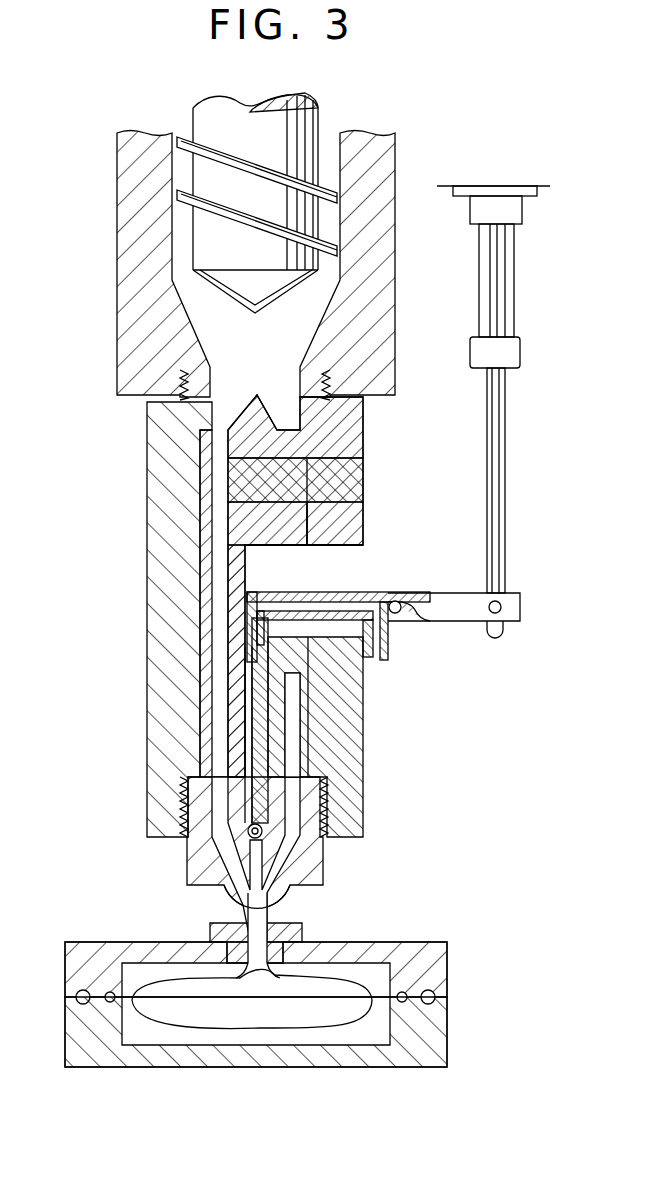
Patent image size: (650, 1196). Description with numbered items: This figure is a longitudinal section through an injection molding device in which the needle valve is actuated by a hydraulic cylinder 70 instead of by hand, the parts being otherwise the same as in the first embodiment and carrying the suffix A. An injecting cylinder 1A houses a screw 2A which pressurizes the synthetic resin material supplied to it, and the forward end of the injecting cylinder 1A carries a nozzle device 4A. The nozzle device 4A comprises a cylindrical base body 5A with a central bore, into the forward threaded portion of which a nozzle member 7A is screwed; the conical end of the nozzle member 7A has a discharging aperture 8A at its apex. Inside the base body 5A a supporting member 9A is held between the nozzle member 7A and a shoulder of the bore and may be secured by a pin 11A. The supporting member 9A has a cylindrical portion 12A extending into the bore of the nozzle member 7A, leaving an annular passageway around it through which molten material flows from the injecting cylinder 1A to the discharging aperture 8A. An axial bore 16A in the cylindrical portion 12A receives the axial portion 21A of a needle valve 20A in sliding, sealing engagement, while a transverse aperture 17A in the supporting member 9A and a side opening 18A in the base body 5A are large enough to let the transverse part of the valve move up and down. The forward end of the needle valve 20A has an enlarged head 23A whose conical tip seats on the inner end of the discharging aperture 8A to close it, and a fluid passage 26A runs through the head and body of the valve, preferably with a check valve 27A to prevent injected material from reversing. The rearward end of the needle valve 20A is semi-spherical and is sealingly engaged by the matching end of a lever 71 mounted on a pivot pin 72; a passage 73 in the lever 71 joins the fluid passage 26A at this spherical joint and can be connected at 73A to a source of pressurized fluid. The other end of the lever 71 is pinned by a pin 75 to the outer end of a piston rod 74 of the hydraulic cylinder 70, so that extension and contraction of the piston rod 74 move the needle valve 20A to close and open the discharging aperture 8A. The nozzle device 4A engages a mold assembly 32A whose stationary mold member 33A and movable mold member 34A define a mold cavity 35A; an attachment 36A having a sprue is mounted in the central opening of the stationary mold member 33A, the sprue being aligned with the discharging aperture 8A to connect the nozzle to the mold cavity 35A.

The injecting cylinder 1A is at (117, 172).
The screw 2A is at (248, 298).
The nozzle device 4A is at (368, 521).
The cylindrical base body 5A is at (355, 428).
The pin 11A is at (357, 475).
The supporting member 9A is at (295, 548).
The side opening 18A is at (347, 548).
The transverse aperture 17A is at (257, 550).
The axial bore 16A is at (245, 687).
The fluid passage 26A is at (252, 660).
The axial portion 21A is at (247, 747).
The needle valve 20A is at (274, 720).
The cylindrical portion 12A is at (280, 752).
The check valve 27A is at (248, 836).
The nozzle member 7A is at (315, 852).
The enlarged head 23A is at (278, 870).
The discharging aperture 8A is at (248, 908).
The attachment 36A is at (303, 943).
The mold assembly 32A is at (458, 982).
The stationary mold member 33A is at (70, 968).
The movable mold member 34A is at (75, 1040).
The mold cavity 35A is at (213, 1043).
The hydraulic cylinder 70 is at (512, 258).
The piston rod 74 is at (505, 485).
The lever 71 is at (440, 622).
The pivot pin 72 is at (400, 614).
The pin 75 is at (501, 604).
The passage 73 is at (350, 605).
The connection point of the passage 73A is at (382, 662).